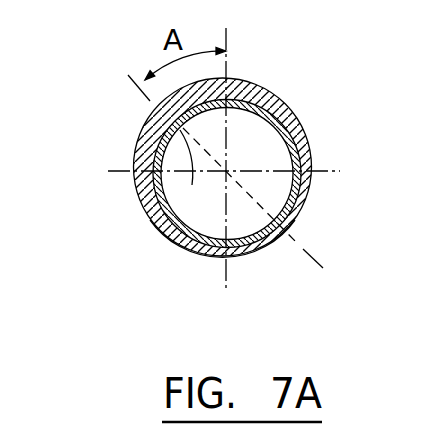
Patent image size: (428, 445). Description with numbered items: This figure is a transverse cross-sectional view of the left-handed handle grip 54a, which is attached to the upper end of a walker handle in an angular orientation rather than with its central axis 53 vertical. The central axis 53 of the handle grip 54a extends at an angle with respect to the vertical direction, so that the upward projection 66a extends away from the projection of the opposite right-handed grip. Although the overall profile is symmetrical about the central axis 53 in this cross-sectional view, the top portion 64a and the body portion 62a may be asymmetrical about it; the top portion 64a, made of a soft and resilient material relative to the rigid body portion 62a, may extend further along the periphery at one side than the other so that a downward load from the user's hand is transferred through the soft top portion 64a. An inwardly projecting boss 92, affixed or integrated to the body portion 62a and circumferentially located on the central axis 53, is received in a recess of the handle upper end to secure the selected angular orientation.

The top portion 64a is at (296, 121).
The upward projection 66a is at (147, 103).
The left-handed handle grip 54a is at (134, 152).
The body portion 62a is at (208, 257).
The inwardly projecting boss 92 is at (193, 174).
The central axis 53 is at (307, 250).